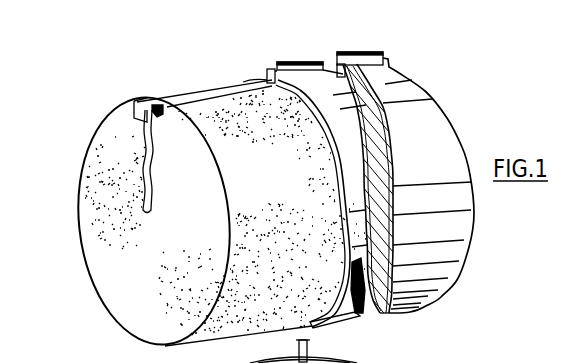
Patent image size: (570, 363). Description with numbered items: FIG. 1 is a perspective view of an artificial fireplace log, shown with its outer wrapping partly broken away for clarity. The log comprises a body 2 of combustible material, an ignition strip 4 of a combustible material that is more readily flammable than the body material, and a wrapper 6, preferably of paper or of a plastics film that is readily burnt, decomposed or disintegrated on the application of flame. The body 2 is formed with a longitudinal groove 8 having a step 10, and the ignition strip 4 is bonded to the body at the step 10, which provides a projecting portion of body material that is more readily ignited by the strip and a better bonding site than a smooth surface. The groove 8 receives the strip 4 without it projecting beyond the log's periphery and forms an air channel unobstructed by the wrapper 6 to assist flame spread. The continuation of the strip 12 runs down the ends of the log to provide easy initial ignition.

The body 2 is at (83, 247).
The ignition strip 4 is at (135, 101).
The wrapper 6 is at (344, 325).
The longitudinal groove 8 is at (185, 100).
The step 10 is at (157, 105).
The continuation of the strip 12 is at (151, 180).